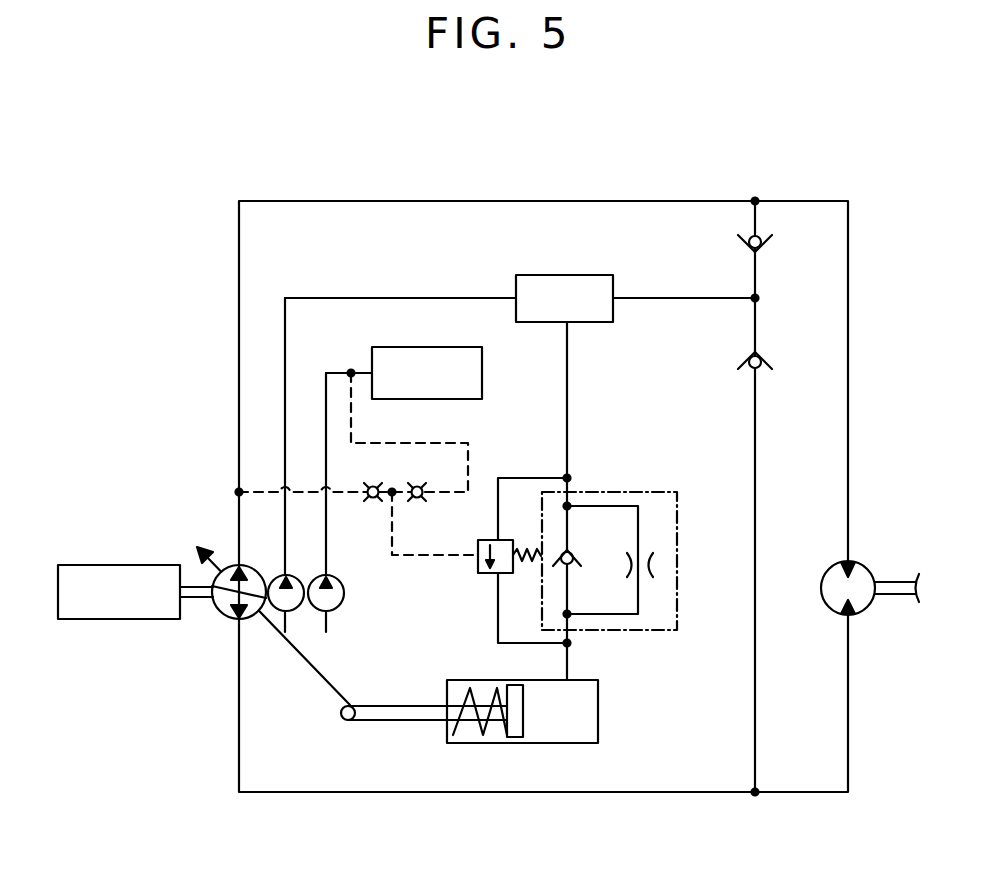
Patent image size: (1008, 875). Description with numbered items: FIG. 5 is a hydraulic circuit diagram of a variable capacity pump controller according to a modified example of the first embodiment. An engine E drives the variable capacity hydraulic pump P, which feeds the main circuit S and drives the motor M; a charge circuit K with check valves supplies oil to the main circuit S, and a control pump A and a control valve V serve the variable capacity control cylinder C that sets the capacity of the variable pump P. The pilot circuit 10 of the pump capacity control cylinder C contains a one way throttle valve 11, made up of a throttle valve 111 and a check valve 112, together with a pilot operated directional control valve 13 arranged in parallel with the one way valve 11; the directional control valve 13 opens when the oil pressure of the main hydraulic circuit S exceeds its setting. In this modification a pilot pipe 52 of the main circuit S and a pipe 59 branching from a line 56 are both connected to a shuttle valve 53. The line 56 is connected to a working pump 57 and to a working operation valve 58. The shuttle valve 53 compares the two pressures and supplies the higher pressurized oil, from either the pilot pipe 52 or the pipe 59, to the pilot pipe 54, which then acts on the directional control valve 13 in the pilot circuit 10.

The main circuit S is at (352, 200).
The control valve V is at (567, 275).
The charge circuit K is at (760, 301).
The motor M is at (862, 562).
The engine E is at (129, 565).
The variable capacity hydraulic pump P is at (222, 616).
The control pump A is at (290, 612).
The variable capacity control cylinder C is at (560, 744).
The pilot circuit 10 is at (568, 380).
The one way throttle valve 11 is at (677, 615).
The throttle valve 111 is at (652, 563).
The check valve 112 is at (572, 565).
The pilot operated directional control valve 13 is at (494, 574).
The pilot pipe 52 is at (258, 491).
The shuttle valve 53 is at (402, 487).
The pilot pipe 54 is at (427, 556).
The line 56 is at (326, 373).
The working pump 57 is at (331, 578).
The working operation valve 58 is at (445, 347).
The pipe 59 is at (458, 443).